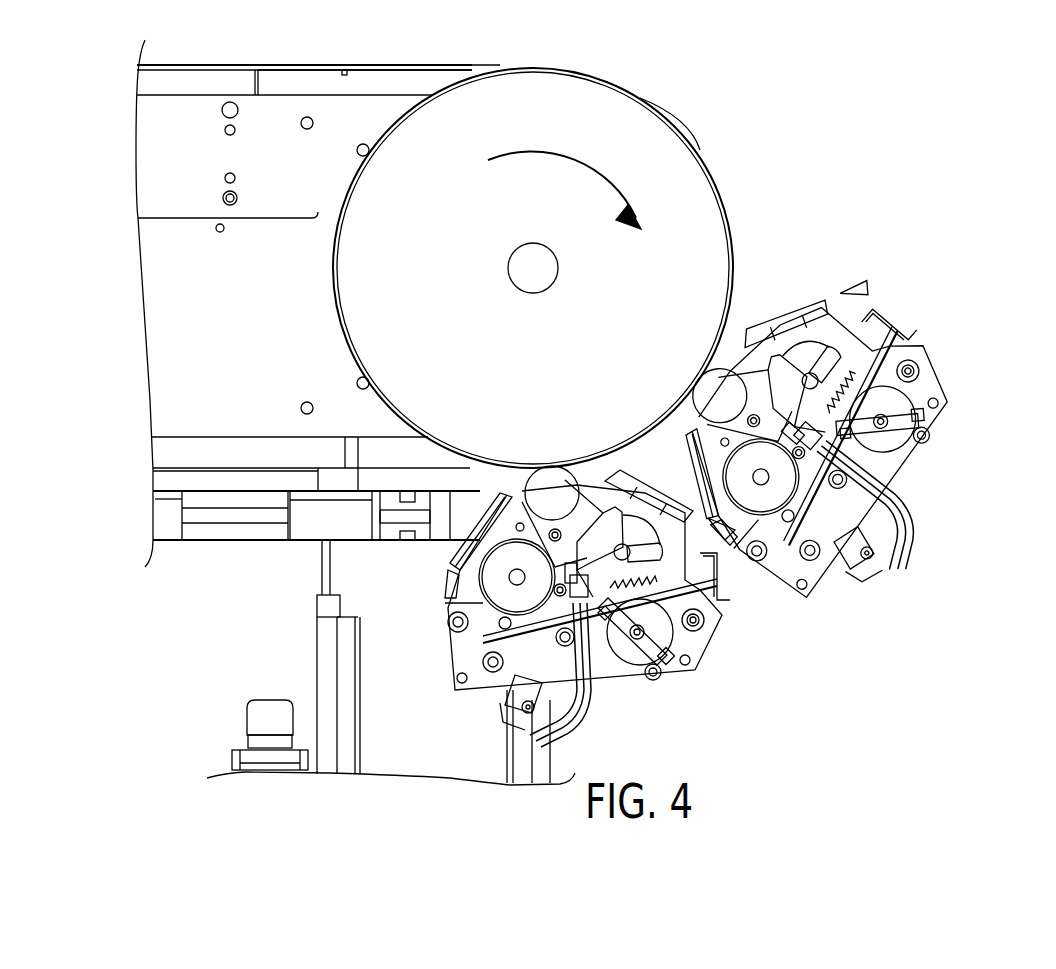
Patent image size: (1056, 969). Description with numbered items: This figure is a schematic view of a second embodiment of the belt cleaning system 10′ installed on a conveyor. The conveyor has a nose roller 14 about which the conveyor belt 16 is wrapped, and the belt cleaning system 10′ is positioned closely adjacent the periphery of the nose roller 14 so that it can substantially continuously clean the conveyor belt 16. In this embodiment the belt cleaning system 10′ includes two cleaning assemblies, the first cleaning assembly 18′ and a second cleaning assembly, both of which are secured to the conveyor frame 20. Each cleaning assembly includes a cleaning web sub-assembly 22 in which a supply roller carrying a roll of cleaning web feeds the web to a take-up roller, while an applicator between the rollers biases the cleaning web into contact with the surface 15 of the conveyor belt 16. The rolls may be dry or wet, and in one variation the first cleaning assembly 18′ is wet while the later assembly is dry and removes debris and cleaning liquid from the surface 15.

The belt cleaning system 10′ is at (830, 205).
The nose roller 14 is at (536, 366).
The surface of the conveyor belt 15 is at (358, 67).
The conveyor belt 16 is at (450, 66).
The first cleaning assembly 18′ is at (975, 395).
The conveyor frame 20 is at (240, 538).
The cleaning web sub-assembly 22 is at (783, 305).